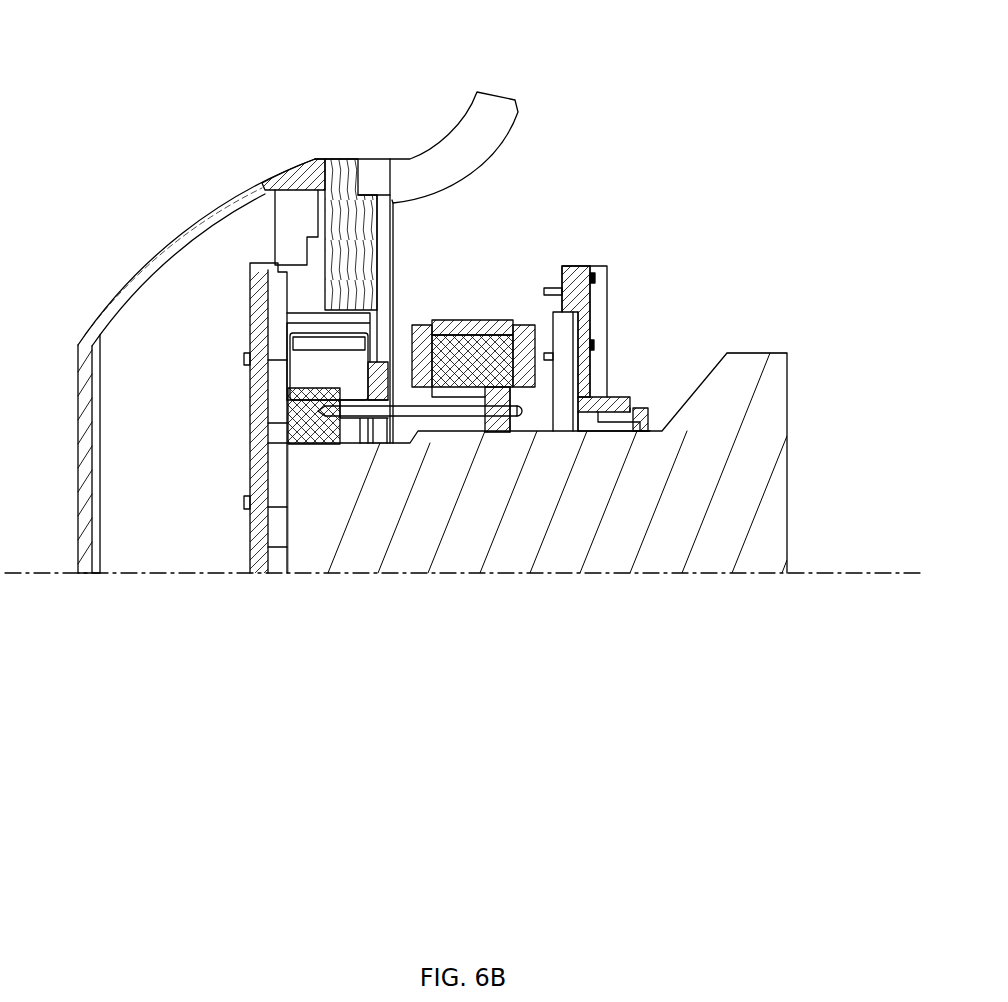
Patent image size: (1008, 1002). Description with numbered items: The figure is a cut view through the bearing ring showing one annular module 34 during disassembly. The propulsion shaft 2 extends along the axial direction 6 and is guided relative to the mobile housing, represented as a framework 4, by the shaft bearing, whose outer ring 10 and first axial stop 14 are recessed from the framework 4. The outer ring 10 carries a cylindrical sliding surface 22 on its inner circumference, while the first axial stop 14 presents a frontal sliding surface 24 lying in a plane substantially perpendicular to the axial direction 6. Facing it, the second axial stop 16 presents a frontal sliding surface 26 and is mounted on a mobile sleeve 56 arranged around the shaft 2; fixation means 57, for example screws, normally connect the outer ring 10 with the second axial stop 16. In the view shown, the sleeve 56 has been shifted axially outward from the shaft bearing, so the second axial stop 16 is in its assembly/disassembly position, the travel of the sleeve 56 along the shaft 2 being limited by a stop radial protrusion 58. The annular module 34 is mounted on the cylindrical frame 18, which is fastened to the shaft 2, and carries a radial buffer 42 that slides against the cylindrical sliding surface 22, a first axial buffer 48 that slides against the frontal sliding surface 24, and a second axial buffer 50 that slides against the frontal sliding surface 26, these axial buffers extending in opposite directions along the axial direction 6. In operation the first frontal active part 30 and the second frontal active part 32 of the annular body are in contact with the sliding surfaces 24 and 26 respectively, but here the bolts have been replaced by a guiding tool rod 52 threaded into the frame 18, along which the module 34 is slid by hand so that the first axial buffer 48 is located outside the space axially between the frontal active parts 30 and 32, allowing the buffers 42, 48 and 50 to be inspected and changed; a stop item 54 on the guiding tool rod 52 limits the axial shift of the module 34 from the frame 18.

The propulsion shaft 2 is at (762, 490).
The framework 4 is at (138, 275).
The axial direction 6 is at (880, 576).
The outer ring 10 is at (348, 290).
The first axial stop 14 is at (250, 495).
The second axial stop 16 is at (596, 315).
The cylindrical frame 18 is at (318, 460).
The cylindrical sliding surface 22 is at (326, 313).
The frontal sliding surface 24 is at (264, 338).
The frontal sliding surface 26 is at (603, 355).
The first frontal active part 30 is at (184, 406).
The second frontal active part 32 is at (401, 385).
The annular module 34 is at (293, 378).
The radial buffer 42 is at (455, 320).
The first axial buffer 48 is at (273, 467).
The second axial buffer 50 is at (375, 445).
The guiding tool rod 52 is at (443, 412).
The stop item 54 is at (512, 416).
The mobile sleeve 56 is at (641, 408).
The fixation means 57 is at (598, 296).
The stop radial protrusion 58 is at (757, 363).